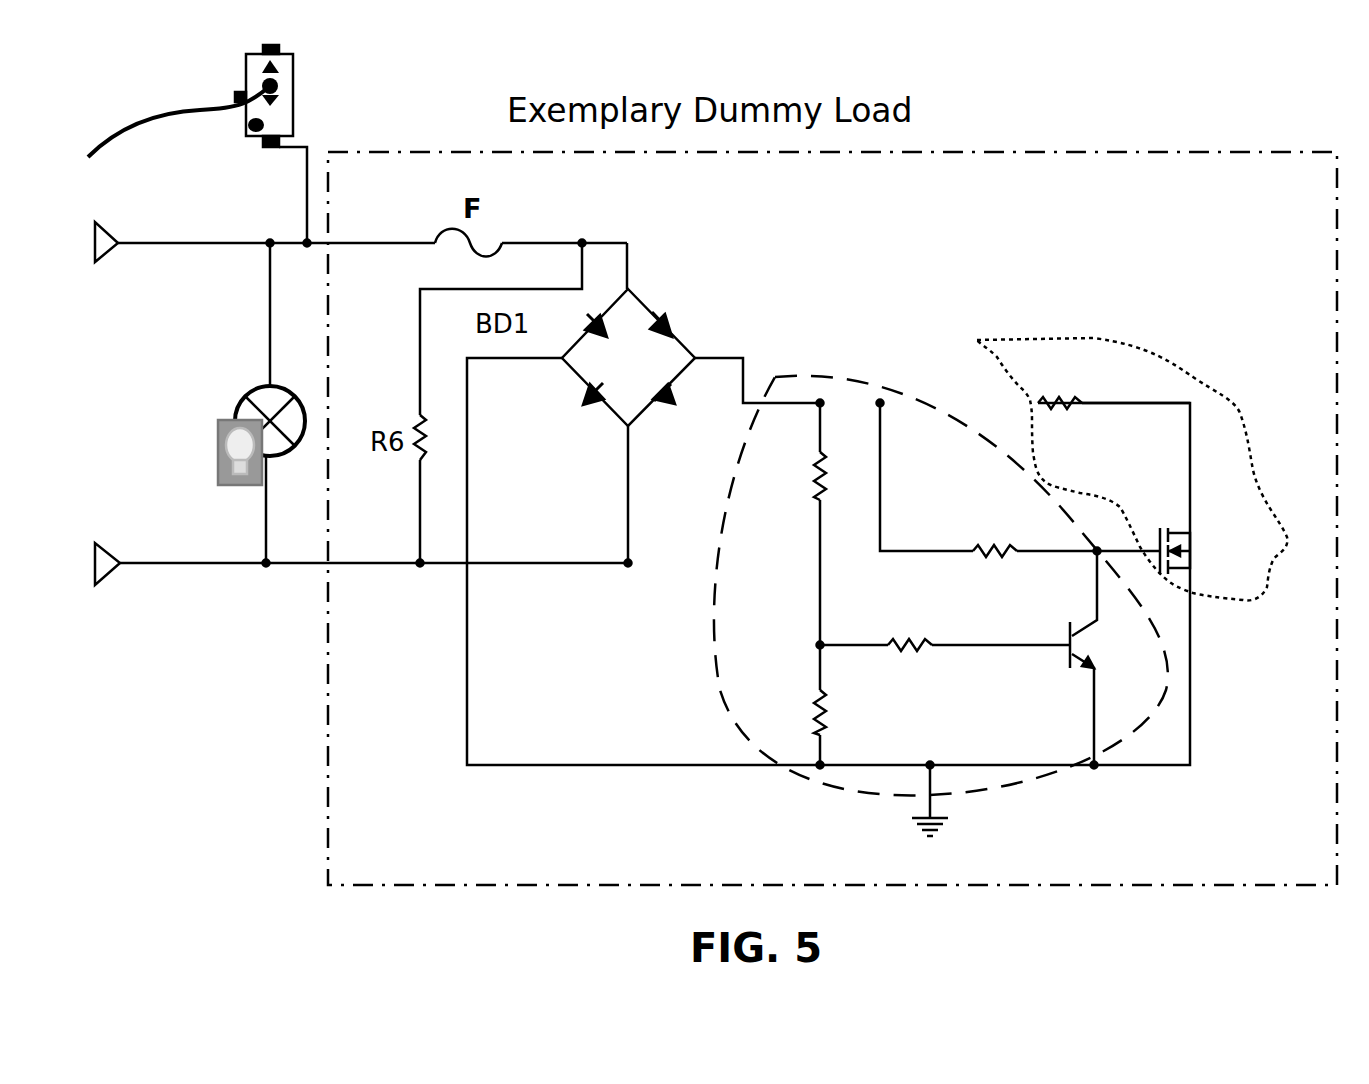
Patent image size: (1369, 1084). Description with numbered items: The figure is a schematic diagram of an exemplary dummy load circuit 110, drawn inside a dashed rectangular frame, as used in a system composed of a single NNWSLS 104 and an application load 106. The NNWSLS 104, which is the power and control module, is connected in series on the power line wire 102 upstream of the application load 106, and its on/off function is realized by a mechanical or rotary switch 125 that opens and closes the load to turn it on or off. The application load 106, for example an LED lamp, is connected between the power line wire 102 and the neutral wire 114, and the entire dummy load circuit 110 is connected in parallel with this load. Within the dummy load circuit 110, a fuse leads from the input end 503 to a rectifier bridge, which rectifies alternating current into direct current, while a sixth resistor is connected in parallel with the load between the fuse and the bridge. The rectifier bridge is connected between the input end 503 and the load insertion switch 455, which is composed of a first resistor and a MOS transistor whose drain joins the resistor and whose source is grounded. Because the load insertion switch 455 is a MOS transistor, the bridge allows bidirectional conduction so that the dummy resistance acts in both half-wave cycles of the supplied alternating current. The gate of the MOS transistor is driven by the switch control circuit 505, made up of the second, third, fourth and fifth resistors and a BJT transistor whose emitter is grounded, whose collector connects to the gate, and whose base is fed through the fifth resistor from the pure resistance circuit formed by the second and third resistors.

The power line wire 102 is at (348, 271).
The NNWSLS 104 is at (197, 144).
The application load 106 is at (234, 403).
The dummy load circuit 110 is at (832, 518).
The neutral wire 114 is at (356, 571).
The mechanical/rotary switch 125 is at (163, 136).
The load insertion switch 455 is at (1132, 439).
The input end 503 is at (555, 313).
The switch control circuit 505 is at (866, 624).